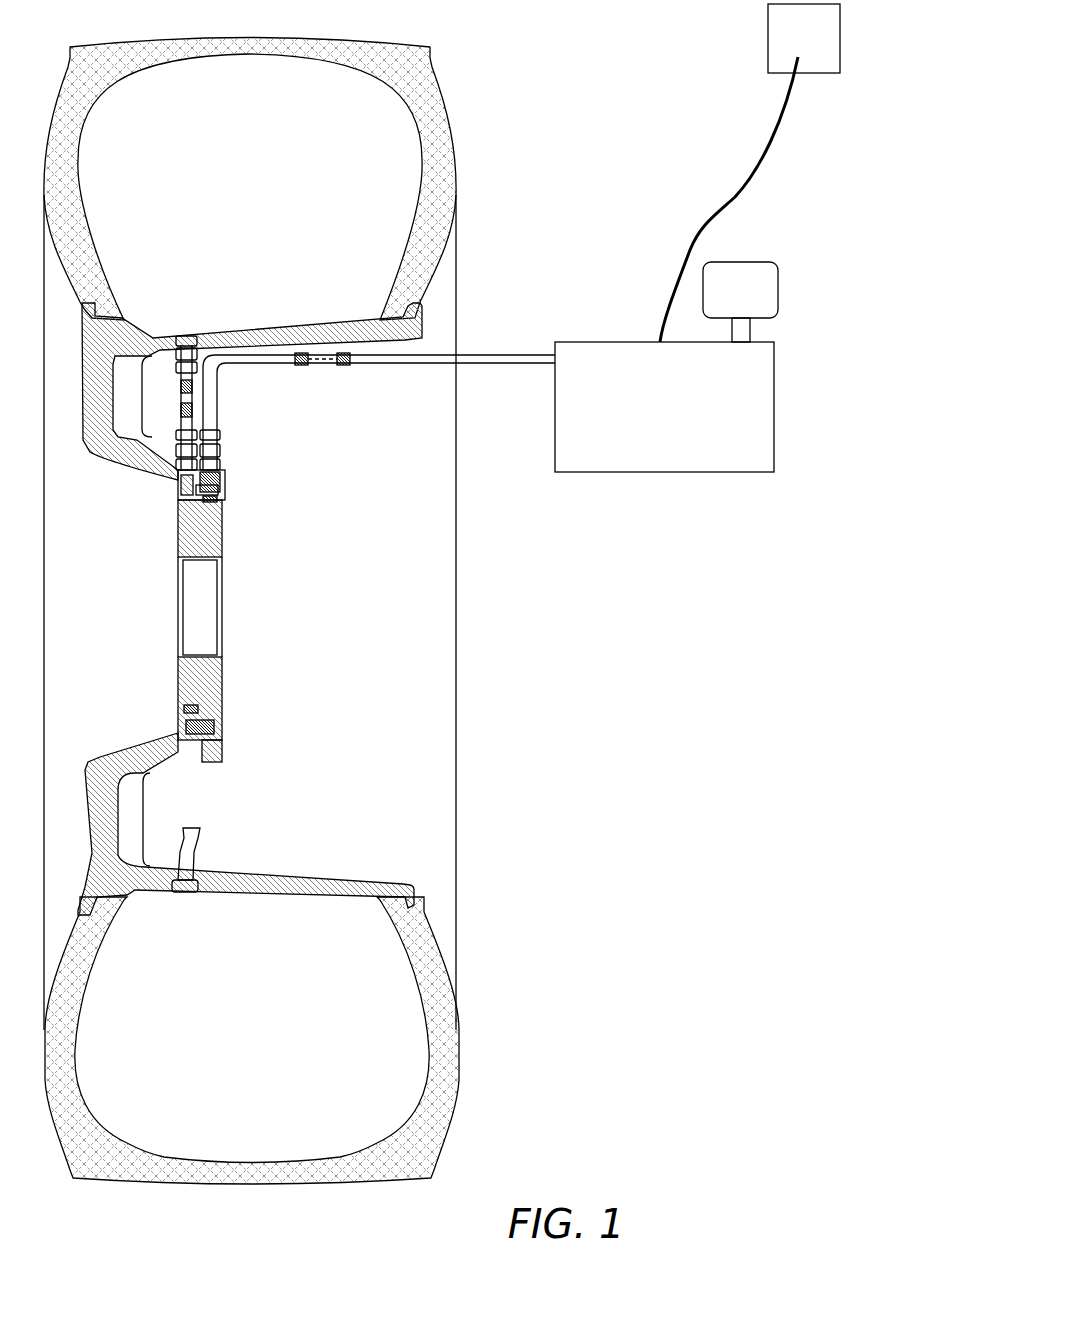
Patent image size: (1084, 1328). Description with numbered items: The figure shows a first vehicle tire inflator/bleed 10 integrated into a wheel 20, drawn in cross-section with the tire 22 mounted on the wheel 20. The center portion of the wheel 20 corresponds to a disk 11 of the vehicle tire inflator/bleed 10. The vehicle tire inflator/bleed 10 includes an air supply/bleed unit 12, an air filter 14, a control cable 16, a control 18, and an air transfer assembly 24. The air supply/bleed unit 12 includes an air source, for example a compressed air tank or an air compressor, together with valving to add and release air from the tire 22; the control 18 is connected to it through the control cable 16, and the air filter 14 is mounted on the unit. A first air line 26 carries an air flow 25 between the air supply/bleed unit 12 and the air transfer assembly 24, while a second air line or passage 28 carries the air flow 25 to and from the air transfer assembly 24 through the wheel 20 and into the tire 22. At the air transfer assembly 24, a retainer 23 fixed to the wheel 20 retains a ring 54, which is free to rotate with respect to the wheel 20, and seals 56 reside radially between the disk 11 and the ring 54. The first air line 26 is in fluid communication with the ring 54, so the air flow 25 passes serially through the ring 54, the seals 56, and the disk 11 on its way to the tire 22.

The vehicle tire inflator/bleed 10 is at (883, 197).
The disk 11 is at (278, 540).
The air supply/bleed unit 12 is at (664, 407).
The air filter 14 is at (740, 302).
The control cable 16 is at (740, 185).
The control 18 is at (804, 38).
The wheel 20 is at (255, 877).
The tire 22 is at (251, 611).
The retainer 23 is at (222, 497).
The air transfer assembly 24 is at (179, 481).
The air flow 25 is at (188, 405).
The first air line 26 is at (368, 367).
The second air line 28 is at (187, 388).
The ring 54 is at (220, 470).
The seals 56 is at (223, 487).